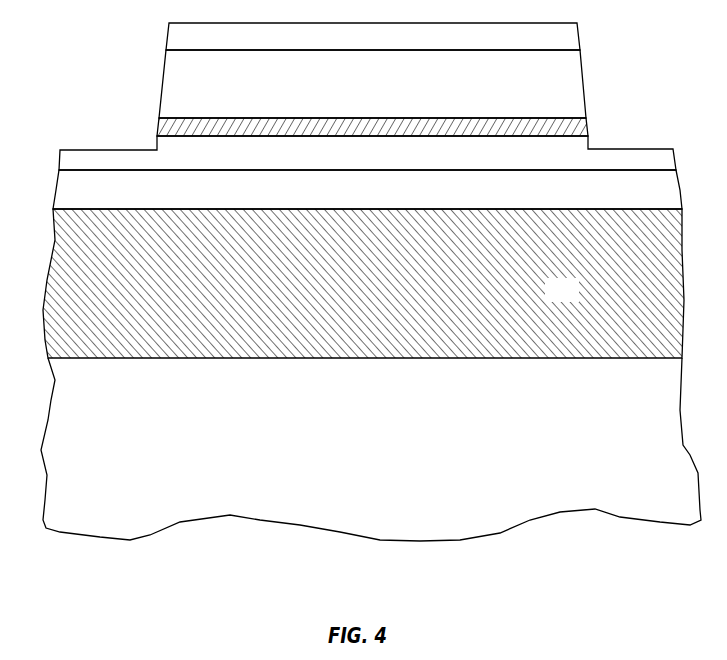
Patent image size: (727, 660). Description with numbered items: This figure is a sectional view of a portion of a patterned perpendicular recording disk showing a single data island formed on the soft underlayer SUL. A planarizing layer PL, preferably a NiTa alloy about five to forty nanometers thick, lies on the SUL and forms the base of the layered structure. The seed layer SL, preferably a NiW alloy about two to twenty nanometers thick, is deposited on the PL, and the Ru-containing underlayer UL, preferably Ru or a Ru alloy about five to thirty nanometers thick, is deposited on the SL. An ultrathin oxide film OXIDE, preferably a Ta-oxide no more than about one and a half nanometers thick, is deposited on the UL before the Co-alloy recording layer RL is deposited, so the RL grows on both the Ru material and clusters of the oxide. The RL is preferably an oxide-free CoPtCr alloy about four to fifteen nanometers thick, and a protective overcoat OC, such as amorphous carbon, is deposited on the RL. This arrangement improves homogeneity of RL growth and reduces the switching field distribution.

The protective overcoat OC is at (373, 37).
The recording layer RL is at (372, 84).
The ultrathin oxide film OXIDE is at (580, 128).
The underlayer UL is at (367, 153).
The seed layer SL is at (367, 189).
The planarizing layer PL is at (363, 283).
The soft underlayer SUL is at (371, 449).